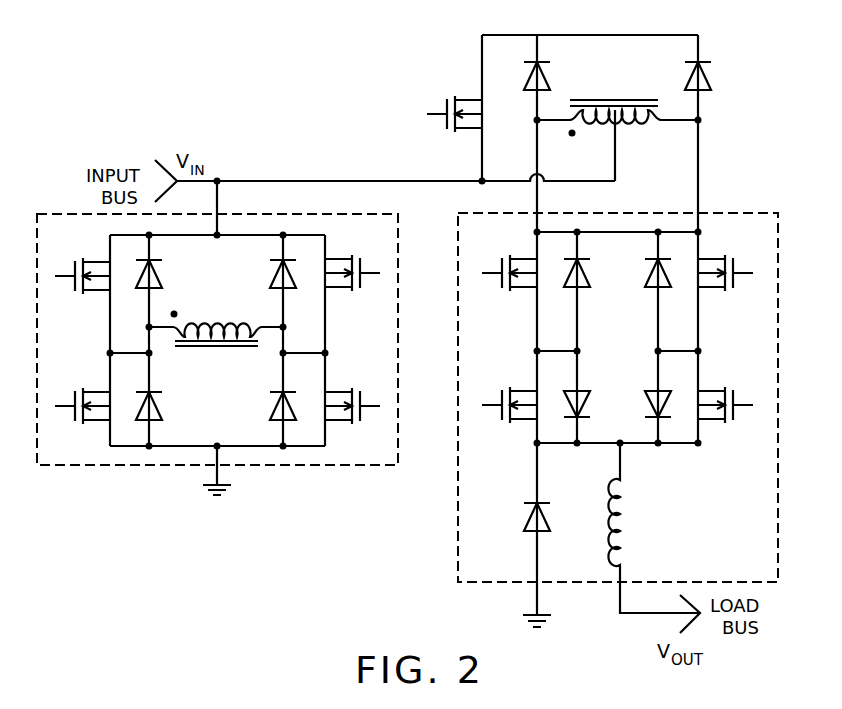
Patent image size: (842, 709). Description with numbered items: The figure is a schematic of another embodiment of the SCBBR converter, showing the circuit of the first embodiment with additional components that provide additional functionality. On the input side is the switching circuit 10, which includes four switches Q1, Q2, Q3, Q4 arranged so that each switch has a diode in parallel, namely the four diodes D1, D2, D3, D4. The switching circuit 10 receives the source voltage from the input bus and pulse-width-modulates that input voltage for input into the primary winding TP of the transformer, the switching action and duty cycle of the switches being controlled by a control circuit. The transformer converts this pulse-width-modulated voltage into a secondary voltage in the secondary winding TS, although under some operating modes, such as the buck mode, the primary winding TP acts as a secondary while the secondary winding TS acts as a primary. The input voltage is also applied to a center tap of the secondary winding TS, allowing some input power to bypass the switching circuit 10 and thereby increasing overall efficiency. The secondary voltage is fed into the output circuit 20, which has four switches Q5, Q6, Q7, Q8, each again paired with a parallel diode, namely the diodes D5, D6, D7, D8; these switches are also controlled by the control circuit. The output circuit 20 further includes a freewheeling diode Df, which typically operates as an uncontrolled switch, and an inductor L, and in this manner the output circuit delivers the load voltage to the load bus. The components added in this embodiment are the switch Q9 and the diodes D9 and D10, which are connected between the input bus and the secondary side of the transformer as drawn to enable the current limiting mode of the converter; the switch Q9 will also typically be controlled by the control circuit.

The switching circuit 10 is at (398, 251).
The output circuit 20 is at (458, 544).
The switch Q1 is at (78, 262).
The switch Q2 is at (358, 260).
The switch Q3 is at (78, 394).
The switch Q4 is at (358, 393).
The switch Q5 is at (501, 261).
The switch Q6 is at (731, 260).
The switch Q7 is at (501, 393).
The switch Q8 is at (731, 391).
The switch Q9 is at (445, 99).
The diode D1 is at (164, 278).
The diode D2 is at (269, 277).
The diode D3 is at (164, 411).
The diode D4 is at (269, 411).
The diode D5 is at (591, 283).
The diode D6 is at (644, 267).
The diode D7 is at (593, 410).
The diode D8 is at (643, 388).
The diode D9 is at (518, 73).
The diode D10 is at (718, 78).
The freewheeling diode Df is at (519, 516).
The inductor L is at (654, 538).
The primary winding TP is at (216, 331).
The secondary winding TS is at (617, 129).